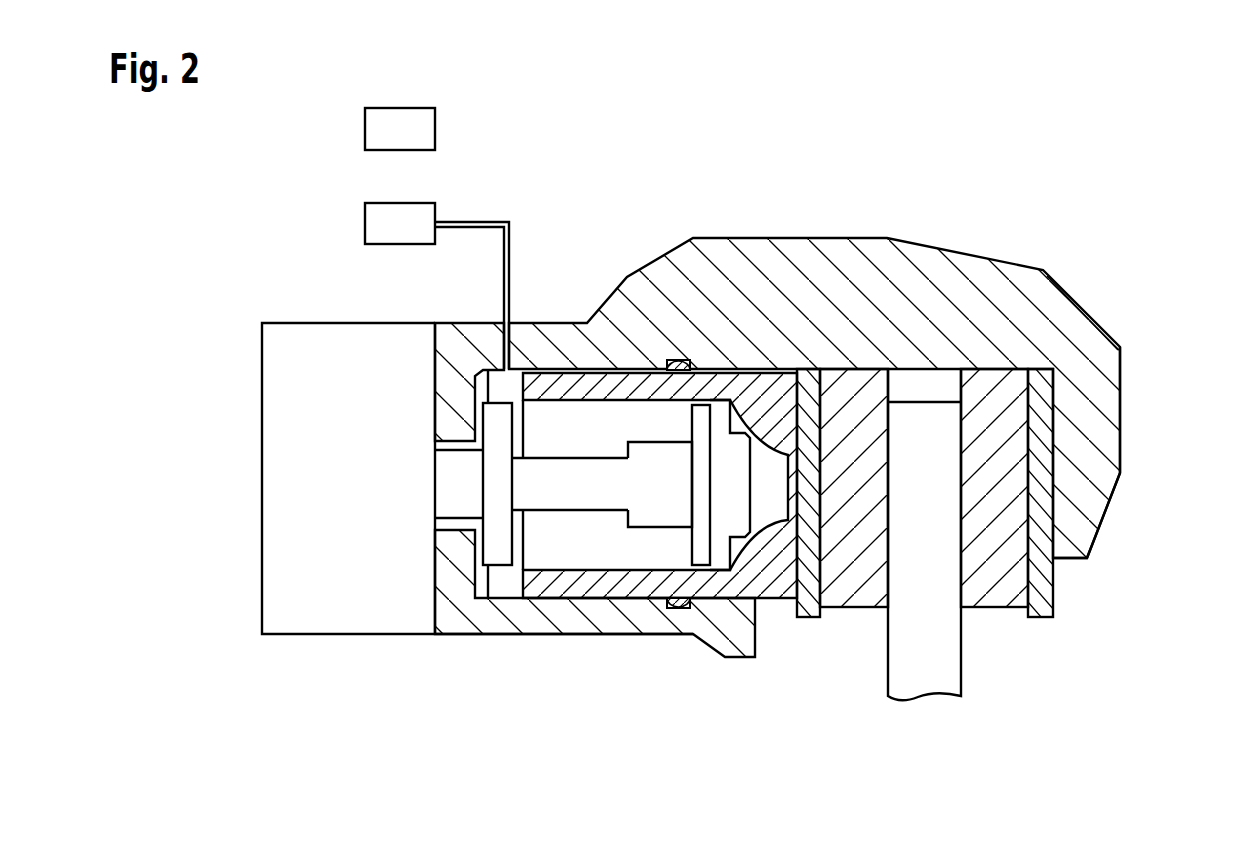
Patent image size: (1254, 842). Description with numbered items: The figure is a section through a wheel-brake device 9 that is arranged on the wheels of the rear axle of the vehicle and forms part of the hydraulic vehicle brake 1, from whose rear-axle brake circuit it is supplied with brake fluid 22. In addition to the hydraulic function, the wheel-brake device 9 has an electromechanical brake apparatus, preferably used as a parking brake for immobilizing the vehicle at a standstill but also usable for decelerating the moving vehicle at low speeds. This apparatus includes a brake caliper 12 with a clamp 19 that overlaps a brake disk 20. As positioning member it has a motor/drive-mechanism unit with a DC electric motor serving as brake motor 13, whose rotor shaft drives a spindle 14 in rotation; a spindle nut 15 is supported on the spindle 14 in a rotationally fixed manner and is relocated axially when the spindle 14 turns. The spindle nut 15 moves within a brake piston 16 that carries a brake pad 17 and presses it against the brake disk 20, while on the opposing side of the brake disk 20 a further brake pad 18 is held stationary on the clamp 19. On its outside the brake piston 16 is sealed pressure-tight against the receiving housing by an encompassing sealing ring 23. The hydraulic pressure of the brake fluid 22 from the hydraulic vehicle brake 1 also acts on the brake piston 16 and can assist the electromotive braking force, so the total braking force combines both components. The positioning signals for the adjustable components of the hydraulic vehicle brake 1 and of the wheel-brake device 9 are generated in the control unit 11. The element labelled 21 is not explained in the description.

The hydraulic vehicle brake 1 is at (365, 223).
The wheel-brake device 9 is at (1026, 210).
The control unit 11 is at (365, 127).
The brake caliper 12 is at (800, 253).
The brake motor 13 is at (338, 634).
The spindle 14 is at (568, 487).
The spindle nut 15 is at (663, 498).
The brake piston 16 is at (617, 587).
The brake pad 17 is at (853, 595).
The further brake pad 18 is at (1005, 605).
The clamp 19 is at (1111, 445).
The brake disk 20 is at (923, 670).
The sensor element 21 is at (503, 555).
The brake fluid 22 is at (498, 580).
The sealing ring 23 is at (690, 608).